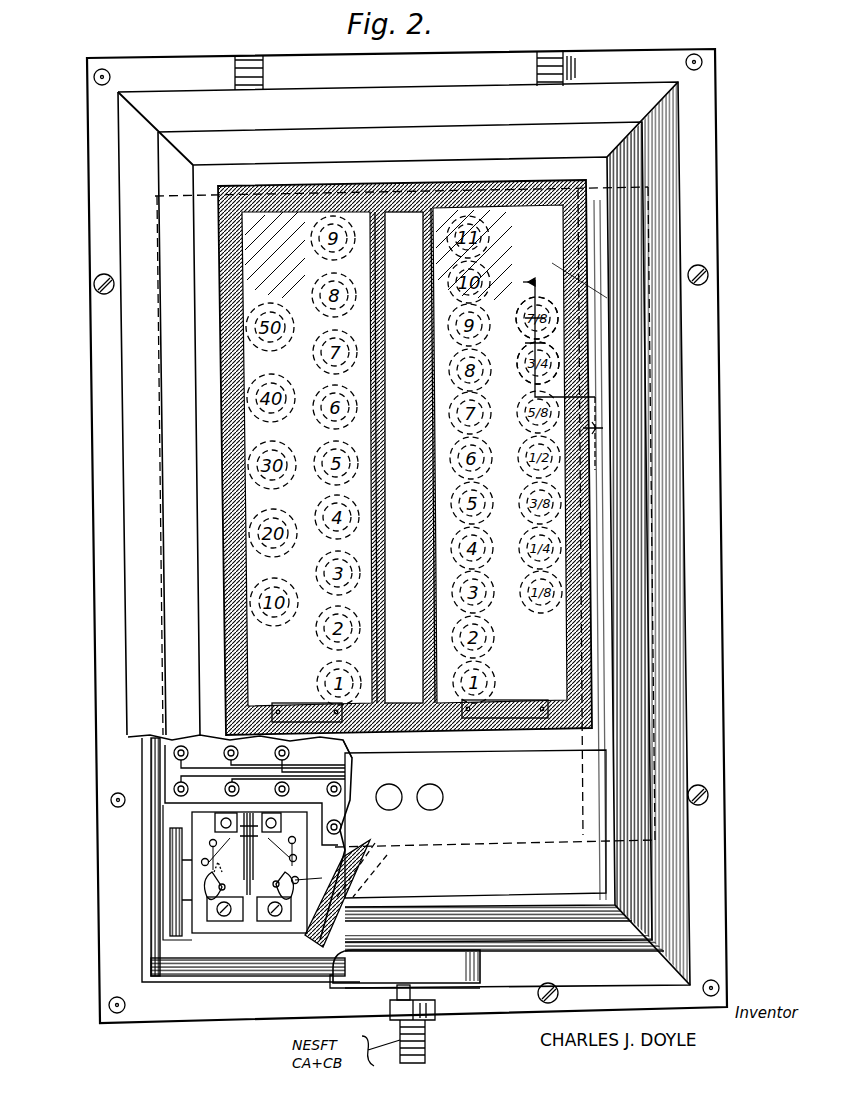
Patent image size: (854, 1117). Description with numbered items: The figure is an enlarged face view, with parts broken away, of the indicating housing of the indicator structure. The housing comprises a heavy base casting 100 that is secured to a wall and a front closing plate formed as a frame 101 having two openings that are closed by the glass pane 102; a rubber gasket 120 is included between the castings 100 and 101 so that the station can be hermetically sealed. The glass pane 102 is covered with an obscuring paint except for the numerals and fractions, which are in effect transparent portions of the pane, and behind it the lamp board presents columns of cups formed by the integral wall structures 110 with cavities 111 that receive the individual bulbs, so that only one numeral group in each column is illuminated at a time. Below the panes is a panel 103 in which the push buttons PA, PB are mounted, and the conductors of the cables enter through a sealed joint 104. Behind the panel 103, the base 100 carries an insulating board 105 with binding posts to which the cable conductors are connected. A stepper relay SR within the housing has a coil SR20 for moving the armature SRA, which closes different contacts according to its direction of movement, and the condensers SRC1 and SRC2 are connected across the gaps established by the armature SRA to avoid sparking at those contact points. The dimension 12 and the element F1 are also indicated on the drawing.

The base casting 100 is at (702, 151).
The frame 101 is at (663, 414).
The glass pane 102 is at (405, 457).
The panel 103 is at (475, 824).
The sealed joint 104 is at (398, 1010).
The insulating board 105 is at (259, 790).
The integral wall structures 110 is at (550, 343).
The cavities 111 is at (560, 316).
The rubber gasket 120 is at (178, 848).
The dial spacing dimension 12 is at (565, 362).
The stepper relay SR is at (225, 921).
The armature SRA is at (248, 921).
The coil SR20 is at (280, 922).
The condenser SRC1 is at (370, 873).
The condenser SRC2 is at (176, 896).
The push button PA is at (389, 790).
The push button PB is at (436, 792).
The fuse F1 is at (336, 762).